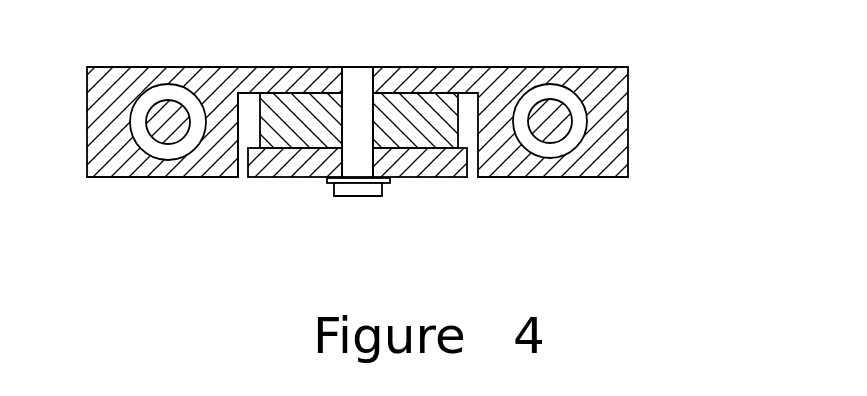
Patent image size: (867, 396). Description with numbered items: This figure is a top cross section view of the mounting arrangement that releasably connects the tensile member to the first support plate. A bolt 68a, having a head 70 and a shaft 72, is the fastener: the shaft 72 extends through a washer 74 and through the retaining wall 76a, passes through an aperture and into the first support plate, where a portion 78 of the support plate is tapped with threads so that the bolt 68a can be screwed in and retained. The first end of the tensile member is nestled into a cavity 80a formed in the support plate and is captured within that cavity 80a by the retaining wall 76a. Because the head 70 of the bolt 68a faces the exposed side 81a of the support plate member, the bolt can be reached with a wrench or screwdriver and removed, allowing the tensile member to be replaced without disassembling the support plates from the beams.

The bolt 68a is at (357, 197).
The head 70 is at (380, 187).
The shaft 72 is at (360, 163).
The washer 74 is at (327, 181).
The retaining wall 76a is at (457, 163).
The portion of the support plate 78 is at (338, 79).
The cavity 80a is at (249, 126).
The exposed side 81a is at (168, 178).